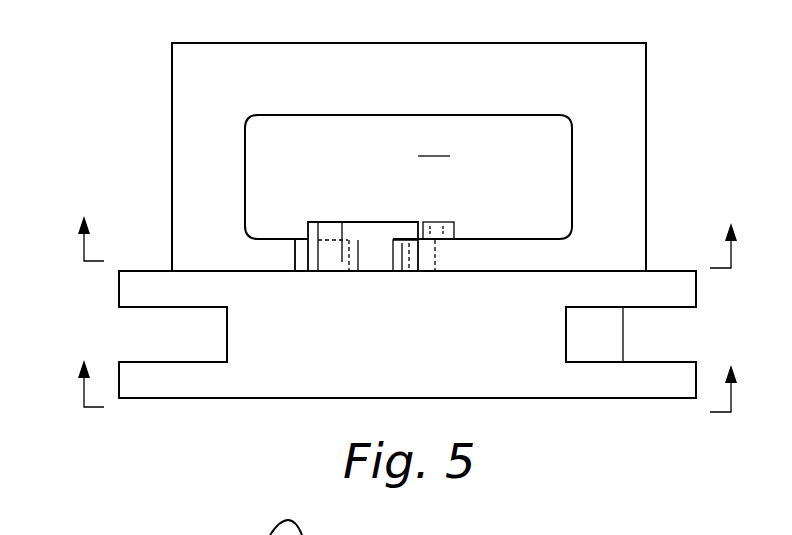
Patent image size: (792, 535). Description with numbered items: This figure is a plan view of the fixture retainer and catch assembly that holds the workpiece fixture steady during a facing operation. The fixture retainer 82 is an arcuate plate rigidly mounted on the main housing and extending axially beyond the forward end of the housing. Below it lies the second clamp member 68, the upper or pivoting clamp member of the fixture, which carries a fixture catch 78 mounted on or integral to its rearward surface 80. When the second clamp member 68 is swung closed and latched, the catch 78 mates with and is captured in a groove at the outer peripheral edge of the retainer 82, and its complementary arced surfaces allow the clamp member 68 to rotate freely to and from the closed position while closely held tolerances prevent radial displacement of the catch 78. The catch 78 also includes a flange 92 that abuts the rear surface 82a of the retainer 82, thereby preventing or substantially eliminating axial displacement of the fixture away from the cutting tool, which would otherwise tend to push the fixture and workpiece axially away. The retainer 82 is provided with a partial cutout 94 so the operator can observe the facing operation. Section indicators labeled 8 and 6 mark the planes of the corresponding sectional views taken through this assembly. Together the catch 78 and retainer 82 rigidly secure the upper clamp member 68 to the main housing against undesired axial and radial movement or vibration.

The fixture retainer 82 is at (622, 108).
The rear surface 82a is at (500, 217).
The rearward surface 80 is at (525, 270).
The partial cutout 94 is at (434, 143).
The fixture catch 78 is at (336, 206).
The flange 92 is at (457, 230).
The second clamp member 68 is at (513, 390).
The section line 8- 8 is at (407, 227).
The section line 6- 6 is at (408, 372).